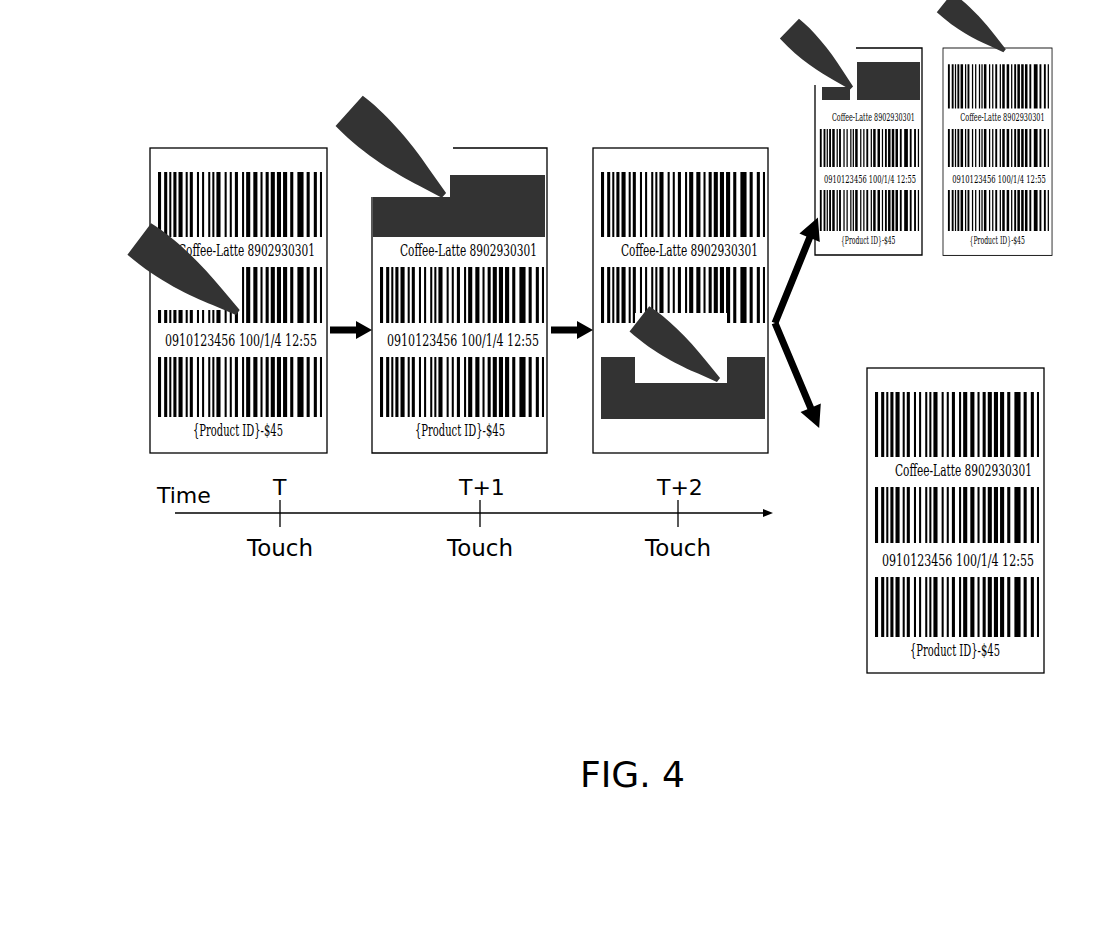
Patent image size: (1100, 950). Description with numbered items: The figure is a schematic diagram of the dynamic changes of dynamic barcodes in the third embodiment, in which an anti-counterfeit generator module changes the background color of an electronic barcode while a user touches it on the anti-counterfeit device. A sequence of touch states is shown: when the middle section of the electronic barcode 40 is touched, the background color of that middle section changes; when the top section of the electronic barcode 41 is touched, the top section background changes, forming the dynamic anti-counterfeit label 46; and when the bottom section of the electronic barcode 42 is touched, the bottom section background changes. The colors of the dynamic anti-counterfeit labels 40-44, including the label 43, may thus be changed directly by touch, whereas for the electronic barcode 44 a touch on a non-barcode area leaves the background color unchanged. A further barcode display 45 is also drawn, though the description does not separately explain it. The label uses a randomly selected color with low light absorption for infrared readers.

The electronic barcode 40 is at (210, 148).
The electronic barcode 41 is at (463, 267).
The electronic barcode 42 is at (665, 147).
The dynamic anti-counterfeit label 43 is at (867, 48).
The electronic barcode 44 is at (1018, 48).
The alternative screen state 45 is at (943, 368).
The dynamic anti-counterfeit label 46 is at (478, 172).